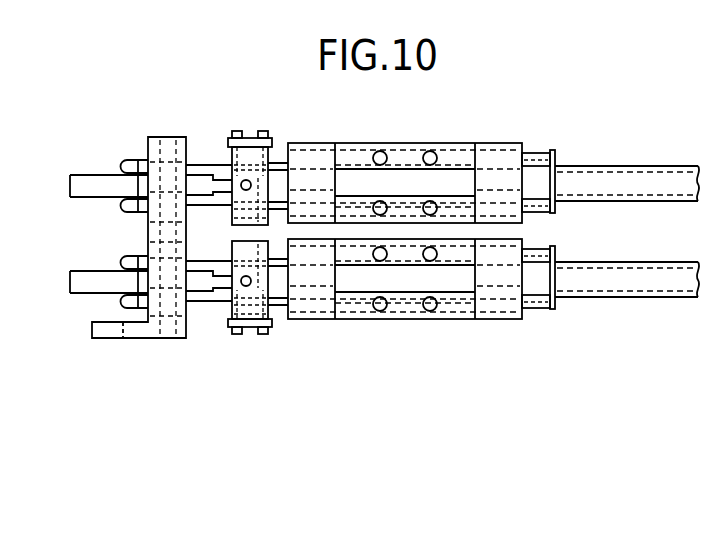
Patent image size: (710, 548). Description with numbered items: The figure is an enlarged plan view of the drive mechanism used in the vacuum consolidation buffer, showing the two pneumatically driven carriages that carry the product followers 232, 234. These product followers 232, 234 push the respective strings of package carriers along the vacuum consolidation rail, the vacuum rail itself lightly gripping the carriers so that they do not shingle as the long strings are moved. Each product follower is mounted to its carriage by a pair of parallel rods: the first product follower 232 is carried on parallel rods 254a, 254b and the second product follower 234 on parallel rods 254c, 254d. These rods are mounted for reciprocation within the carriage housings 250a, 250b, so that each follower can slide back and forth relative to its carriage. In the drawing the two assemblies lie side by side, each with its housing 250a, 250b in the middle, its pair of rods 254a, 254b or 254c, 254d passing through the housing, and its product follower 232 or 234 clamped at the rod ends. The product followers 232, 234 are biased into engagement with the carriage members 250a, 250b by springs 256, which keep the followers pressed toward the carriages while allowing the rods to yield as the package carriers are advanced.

The product follower 232 is at (253, 327).
The product follower 234 is at (250, 137).
The housing 250a is at (403, 320).
The housing 250b is at (408, 143).
The parallel rod 254a is at (552, 309).
The parallel rod 254b is at (553, 268).
The parallel rod 254c is at (553, 213).
The parallel rod 254d is at (546, 150).
The spring 256 is at (536, 172).